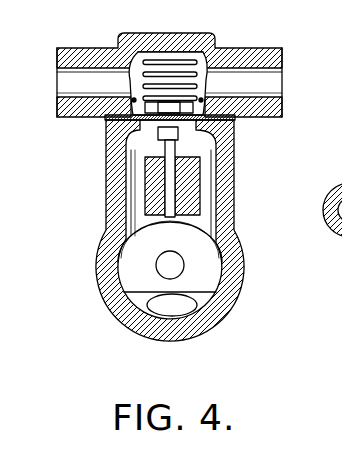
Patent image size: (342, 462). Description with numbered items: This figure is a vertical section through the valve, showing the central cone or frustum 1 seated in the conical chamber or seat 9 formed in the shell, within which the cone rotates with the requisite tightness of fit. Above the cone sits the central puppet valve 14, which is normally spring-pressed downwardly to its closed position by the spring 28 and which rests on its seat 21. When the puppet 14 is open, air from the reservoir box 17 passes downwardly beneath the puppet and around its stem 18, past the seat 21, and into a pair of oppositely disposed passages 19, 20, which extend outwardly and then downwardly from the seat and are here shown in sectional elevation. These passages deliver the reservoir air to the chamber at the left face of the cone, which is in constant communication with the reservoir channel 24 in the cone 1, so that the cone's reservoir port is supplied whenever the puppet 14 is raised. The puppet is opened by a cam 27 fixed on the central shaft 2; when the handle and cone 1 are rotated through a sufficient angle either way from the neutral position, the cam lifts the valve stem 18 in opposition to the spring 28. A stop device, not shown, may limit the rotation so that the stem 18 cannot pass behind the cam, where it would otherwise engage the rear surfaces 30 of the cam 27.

The central cone or frustum 1 is at (220, 292).
The central shaft 2 is at (170, 265).
The conical chamber or seat 9 is at (222, 265).
The central puppet valve 14 is at (232, 99).
The reservoir box 17 is at (169, 94).
The valve stem 18 is at (175, 150).
The left-hand passage 19 is at (142, 186).
The right-hand passage 20 is at (195, 186).
The seat of the puppet valve 21 is at (200, 118).
The reservoir channel 24 is at (172, 305).
The cam 27 is at (128, 250).
The spring 28 is at (214, 46).
The rear surfaces of the cam 30 is at (133, 272).